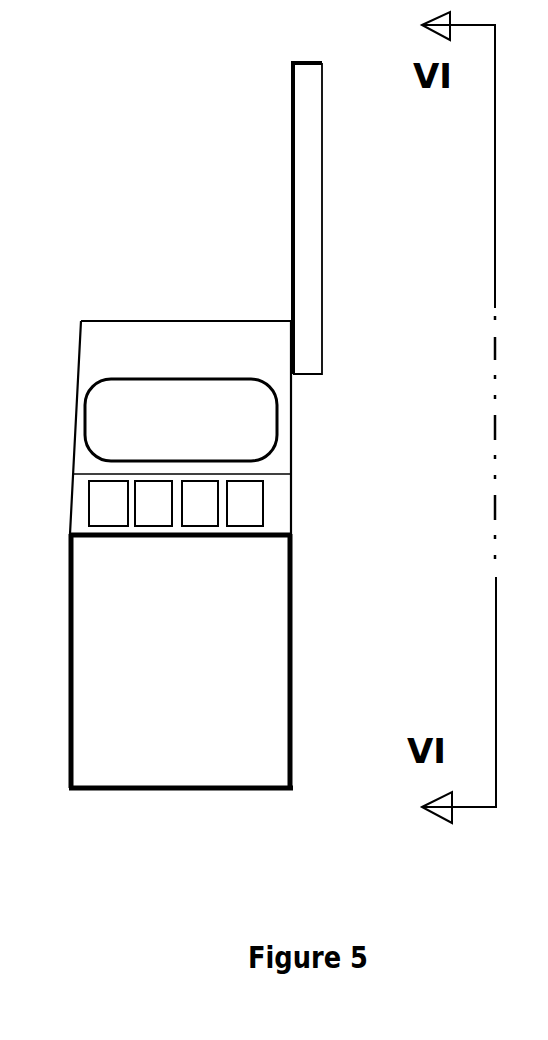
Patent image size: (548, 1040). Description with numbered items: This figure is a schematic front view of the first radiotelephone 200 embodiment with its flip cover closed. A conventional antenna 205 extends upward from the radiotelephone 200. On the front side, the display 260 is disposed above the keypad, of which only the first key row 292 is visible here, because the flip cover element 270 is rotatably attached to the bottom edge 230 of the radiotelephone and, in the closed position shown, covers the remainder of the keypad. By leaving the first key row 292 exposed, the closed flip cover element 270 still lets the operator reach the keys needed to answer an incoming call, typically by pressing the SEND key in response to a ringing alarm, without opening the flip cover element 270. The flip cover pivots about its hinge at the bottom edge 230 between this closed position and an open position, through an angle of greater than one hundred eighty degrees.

The radiotelephone 200 is at (70, 350).
The antenna 205 is at (322, 234).
The display 260 is at (230, 395).
The first key row 292 is at (277, 505).
The flip cover element 270 is at (262, 638).
The bottom edge 230 is at (205, 792).